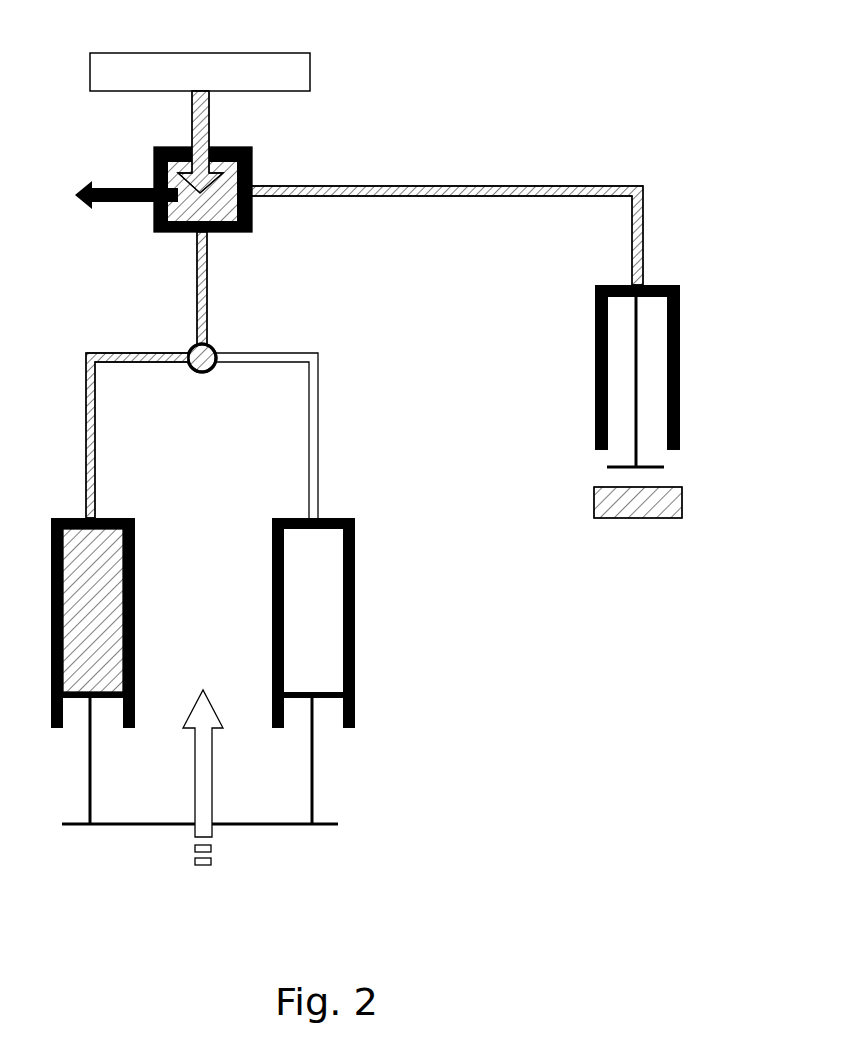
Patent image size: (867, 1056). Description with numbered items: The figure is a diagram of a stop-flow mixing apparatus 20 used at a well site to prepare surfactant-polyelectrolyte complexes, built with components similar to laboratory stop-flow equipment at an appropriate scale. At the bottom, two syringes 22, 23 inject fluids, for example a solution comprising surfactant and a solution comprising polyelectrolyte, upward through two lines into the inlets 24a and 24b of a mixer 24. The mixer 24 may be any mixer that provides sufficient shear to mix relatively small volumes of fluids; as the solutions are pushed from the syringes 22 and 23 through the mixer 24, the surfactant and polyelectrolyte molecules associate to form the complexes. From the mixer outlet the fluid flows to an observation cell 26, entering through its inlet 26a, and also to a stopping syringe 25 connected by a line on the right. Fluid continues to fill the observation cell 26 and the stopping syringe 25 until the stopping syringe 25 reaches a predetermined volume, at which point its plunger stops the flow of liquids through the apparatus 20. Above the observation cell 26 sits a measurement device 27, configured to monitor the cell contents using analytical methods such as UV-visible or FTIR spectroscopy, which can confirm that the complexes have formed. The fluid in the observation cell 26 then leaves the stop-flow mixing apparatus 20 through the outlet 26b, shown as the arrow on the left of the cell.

The stop-flow mixing apparatus 20 is at (546, 72).
The syringe 22 is at (74, 671).
The syringe 23 is at (332, 671).
The mixer 24 is at (132, 355).
The inlet 24a is at (185, 364).
The inlet 24b is at (219, 364).
The stopping syringe 25 is at (656, 401).
The observation cell 26 is at (221, 161).
The inlet 26a is at (197, 245).
The outlet 26b is at (154, 212).
The measurement device 27 is at (218, 72).